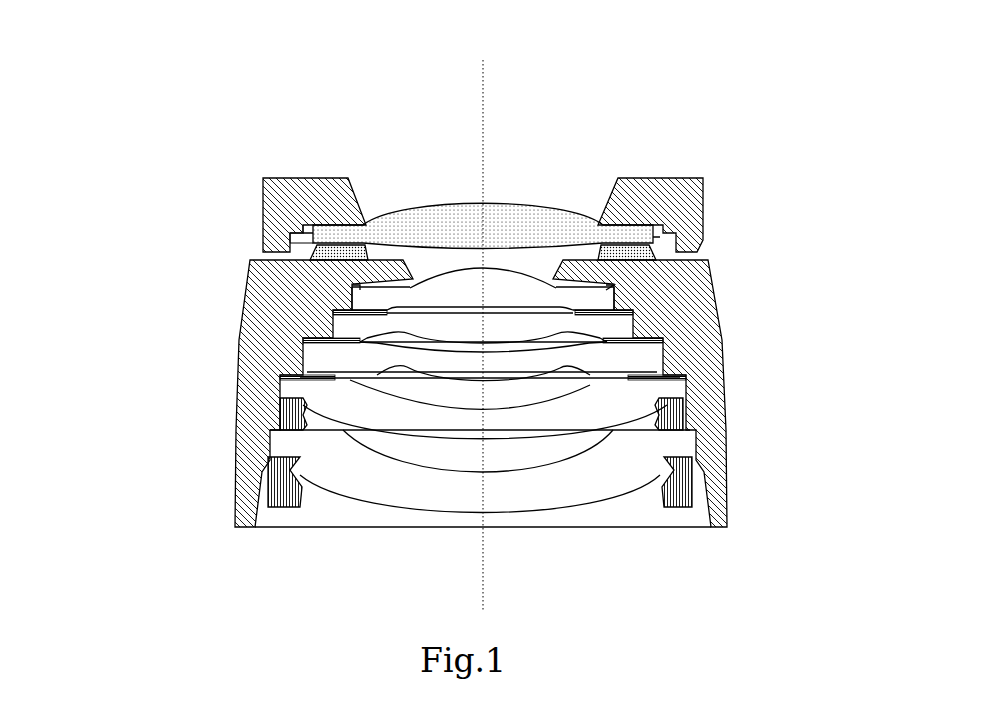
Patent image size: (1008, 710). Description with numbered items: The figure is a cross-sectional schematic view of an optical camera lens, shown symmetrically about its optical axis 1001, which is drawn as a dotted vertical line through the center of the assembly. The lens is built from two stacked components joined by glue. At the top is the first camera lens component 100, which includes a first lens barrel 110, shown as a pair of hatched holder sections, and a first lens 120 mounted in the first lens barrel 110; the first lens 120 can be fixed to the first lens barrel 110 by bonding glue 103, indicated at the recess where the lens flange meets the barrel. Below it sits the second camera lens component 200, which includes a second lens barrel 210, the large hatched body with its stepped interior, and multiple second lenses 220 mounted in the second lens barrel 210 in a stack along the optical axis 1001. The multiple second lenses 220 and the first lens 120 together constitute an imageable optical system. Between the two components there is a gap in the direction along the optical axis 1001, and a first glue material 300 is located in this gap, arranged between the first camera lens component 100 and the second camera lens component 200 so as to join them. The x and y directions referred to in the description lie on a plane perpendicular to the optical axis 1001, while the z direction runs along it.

The optical axis 1001 is at (502, 82).
The first camera lens component 100 is at (475, 154).
The first lens barrel 110 is at (647, 195).
The first lens 120 is at (470, 203).
The bonding glue 103 is at (300, 241).
The first glue material 300 is at (342, 257).
The second camera lens component 200 is at (461, 393).
The second lens barrel 210 is at (305, 288).
The second lenses 220 is at (437, 290).